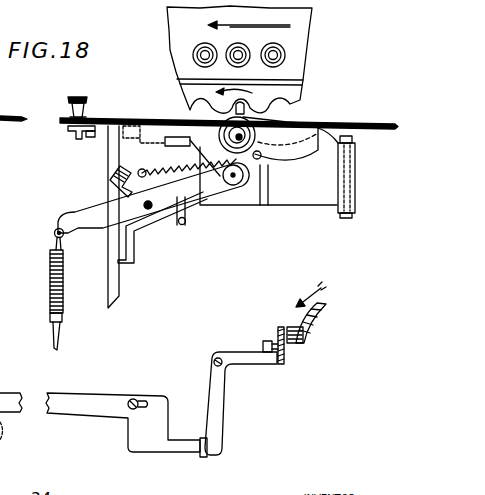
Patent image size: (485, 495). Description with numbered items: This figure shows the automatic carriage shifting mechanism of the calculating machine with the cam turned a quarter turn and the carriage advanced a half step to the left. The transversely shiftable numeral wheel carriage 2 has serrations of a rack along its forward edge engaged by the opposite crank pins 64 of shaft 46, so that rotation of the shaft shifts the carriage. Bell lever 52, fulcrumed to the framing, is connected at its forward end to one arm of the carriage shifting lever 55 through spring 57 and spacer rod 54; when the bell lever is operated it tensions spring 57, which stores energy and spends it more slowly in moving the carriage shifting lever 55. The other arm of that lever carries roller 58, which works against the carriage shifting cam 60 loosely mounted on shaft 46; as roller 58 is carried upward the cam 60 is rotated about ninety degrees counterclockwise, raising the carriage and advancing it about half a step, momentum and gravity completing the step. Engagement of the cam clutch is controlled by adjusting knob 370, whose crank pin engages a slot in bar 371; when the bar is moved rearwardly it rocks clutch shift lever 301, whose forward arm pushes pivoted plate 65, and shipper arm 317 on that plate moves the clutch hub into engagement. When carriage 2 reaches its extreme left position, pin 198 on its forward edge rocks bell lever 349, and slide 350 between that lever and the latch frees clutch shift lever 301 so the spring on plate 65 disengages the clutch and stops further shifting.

The carriage 2 is at (300, 36).
The shaft 46 is at (226, 133).
The bell lever 52 is at (52, 330).
The spacer rod 54 is at (53, 244).
The carriage shifting lever 55 is at (172, 204).
The spring 57 is at (50, 271).
The roller 58 is at (234, 187).
The carriage shifting cam 60 is at (287, 164).
The crank pins 64 is at (245, 108).
The pivoted plate 65 is at (320, 192).
The pin 198 is at (268, 346).
The clutch shift lever 301 is at (115, 122).
The shipper arm 317 is at (270, 128).
The bell lever 349 is at (218, 405).
The slide 350 is at (79, 403).
The adjusting knob 370 is at (85, 111).
The bar 371 is at (73, 136).